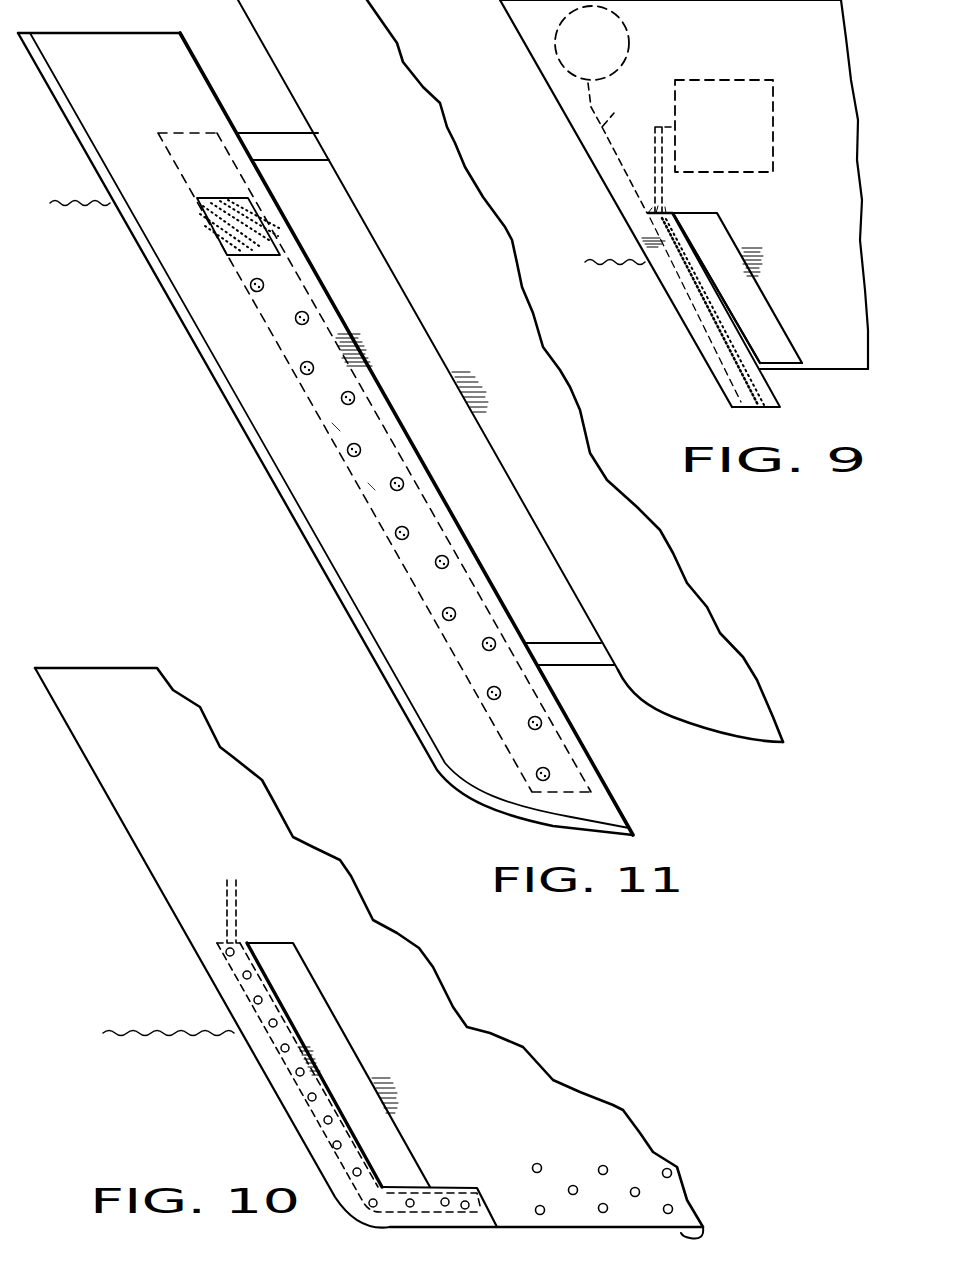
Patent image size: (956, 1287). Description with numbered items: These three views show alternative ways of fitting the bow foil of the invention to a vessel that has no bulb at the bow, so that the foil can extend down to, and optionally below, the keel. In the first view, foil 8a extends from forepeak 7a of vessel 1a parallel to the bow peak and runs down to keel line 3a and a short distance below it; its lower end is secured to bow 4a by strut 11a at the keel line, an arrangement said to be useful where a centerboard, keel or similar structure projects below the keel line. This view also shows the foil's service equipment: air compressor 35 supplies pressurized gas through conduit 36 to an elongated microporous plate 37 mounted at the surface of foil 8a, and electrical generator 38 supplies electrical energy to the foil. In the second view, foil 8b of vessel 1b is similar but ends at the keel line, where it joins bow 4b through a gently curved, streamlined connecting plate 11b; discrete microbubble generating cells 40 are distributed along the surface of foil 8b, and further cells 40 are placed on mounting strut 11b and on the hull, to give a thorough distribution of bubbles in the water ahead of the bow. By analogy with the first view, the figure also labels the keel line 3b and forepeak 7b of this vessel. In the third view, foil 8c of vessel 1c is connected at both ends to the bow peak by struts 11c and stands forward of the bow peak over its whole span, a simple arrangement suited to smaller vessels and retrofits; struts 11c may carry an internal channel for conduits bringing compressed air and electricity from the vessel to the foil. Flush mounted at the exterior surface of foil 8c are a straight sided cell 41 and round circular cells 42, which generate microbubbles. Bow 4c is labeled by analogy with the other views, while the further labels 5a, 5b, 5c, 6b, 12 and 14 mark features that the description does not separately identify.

In FIG. 9, the vessel 1a is at (810, 175).
In FIG. 9, the keel line 3a is at (848, 372).
In FIG. 9, the bow 4a is at (778, 297).
In FIG. 9, the plate edge 5a is at (752, 273).
In FIG. 9, the forepeak 7a is at (612, 201).
In FIG. 9, the foil 8a is at (672, 298).
In FIG. 9, the strut 11a is at (783, 362).
In FIG. 9, the air compressor 35 is at (713, 130).
In FIG. 9, the conduit 36 is at (652, 146).
In FIG. 9, the elongated microporous plate 37 is at (663, 211).
In FIG. 9, the electrical generator 38 is at (580, 58).
In FIG. 11, the vessel 1c is at (580, 408).
In FIG. 11, the plate region 4c is at (561, 522).
In FIG. 11, the plate edge 5c is at (422, 322).
In FIG. 11, the foil 8c is at (318, 526).
In FIG. 11, the struts 11c is at (287, 133).
In FIG. 11, the channel inlet 12 is at (216, 162).
In FIG. 11, the flow direction 14 is at (333, 422).
In FIG. 11, the straight sided cell 41 is at (200, 210).
In FIG. 11, the round circular cells 42 is at (296, 323).
In FIG. 10, the vessel 1b is at (295, 836).
In FIG. 10, the bottom surface 3b is at (707, 1228).
In FIG. 10, the bow 4b is at (415, 1067).
In FIG. 10, the plate 5b is at (331, 1017).
In FIG. 10, the liquid surface 6b is at (157, 1033).
In FIG. 10, the inclined wall edge 7b is at (173, 910).
In FIG. 10, the foil 8b is at (272, 1093).
In FIG. 10, the connecting plate 11b is at (390, 1228).
In FIG. 10, the microbubble generating cells 40 is at (314, 1097).